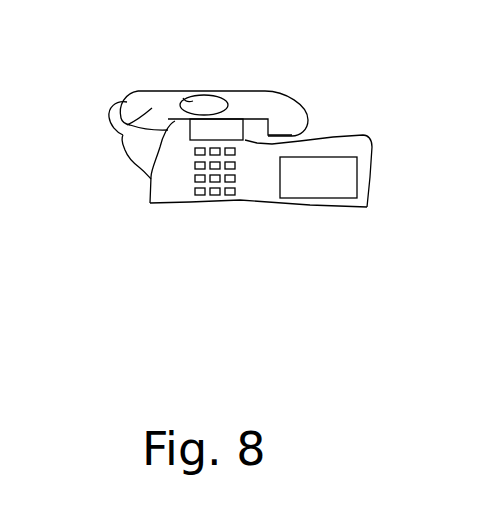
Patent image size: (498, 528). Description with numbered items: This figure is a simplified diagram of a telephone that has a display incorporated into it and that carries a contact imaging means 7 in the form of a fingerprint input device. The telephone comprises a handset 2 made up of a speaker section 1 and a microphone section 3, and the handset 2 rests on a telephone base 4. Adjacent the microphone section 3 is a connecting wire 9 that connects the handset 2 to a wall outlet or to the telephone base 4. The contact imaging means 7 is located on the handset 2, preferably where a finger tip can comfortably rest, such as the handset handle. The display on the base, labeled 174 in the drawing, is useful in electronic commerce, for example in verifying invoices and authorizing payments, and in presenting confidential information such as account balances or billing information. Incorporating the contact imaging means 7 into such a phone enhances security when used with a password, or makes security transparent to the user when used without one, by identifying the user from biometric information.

The speaker section 1 is at (293, 118).
The handset 2 is at (227, 93).
The microphone section 3 is at (122, 137).
The telephone base 4 is at (247, 197).
The contact imaging means 7 is at (183, 98).
The connecting wire 9 is at (140, 173).
The display 174 is at (328, 187).